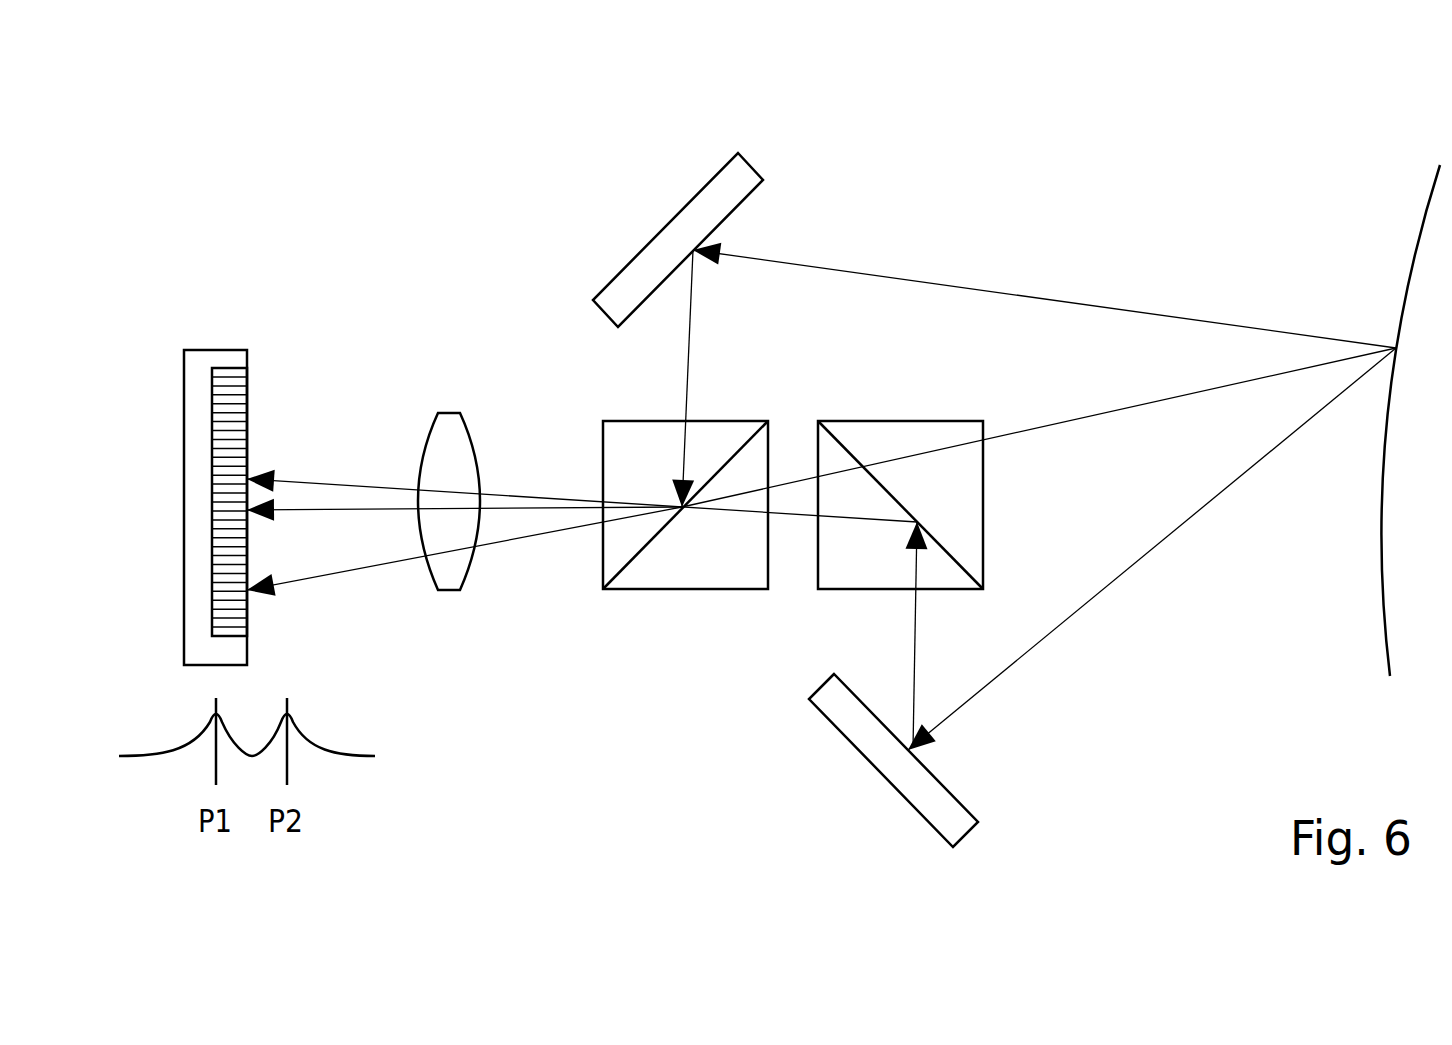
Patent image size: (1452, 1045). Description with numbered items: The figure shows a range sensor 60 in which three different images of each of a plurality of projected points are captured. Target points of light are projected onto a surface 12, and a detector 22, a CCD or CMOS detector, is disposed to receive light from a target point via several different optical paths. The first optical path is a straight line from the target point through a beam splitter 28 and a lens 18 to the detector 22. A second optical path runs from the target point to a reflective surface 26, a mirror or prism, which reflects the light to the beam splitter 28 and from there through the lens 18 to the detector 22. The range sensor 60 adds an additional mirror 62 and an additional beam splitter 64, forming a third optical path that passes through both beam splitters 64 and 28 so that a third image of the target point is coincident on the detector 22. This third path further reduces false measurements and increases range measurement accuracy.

The range sensor 60 is at (345, 118).
The detector 22 is at (219, 357).
The lens 18 is at (448, 432).
The beam splitter 28 is at (688, 578).
The additional beam splitter 64 is at (905, 432).
The reflective surface 26 is at (742, 173).
The additional mirror 62 is at (862, 739).
The surface 12 is at (1408, 278).